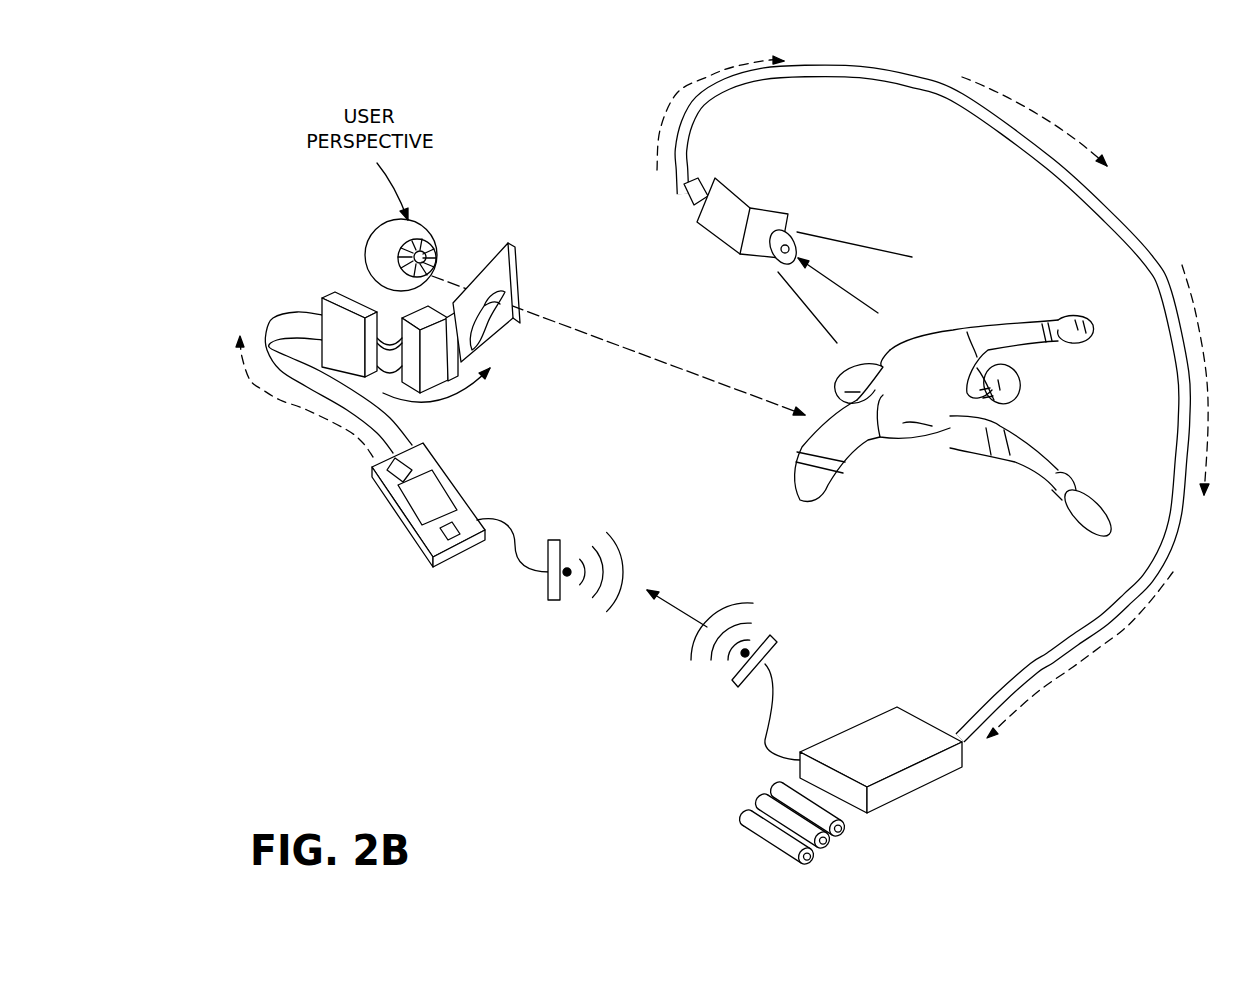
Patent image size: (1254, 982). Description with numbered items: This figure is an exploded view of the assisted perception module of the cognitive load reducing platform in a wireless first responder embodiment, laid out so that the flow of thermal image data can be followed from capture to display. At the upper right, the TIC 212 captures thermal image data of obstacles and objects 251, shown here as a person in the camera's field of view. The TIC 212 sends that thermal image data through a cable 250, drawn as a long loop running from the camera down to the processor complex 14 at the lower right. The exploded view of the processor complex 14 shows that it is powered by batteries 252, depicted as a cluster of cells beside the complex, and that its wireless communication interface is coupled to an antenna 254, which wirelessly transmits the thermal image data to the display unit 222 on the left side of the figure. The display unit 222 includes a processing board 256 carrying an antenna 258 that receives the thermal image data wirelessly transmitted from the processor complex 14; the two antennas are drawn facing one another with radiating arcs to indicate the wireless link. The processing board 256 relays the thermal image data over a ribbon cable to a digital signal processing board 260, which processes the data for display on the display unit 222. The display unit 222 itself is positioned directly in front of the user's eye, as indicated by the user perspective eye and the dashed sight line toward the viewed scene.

The display unit 222 is at (530, 236).
The digital signal processing board 260 is at (325, 288).
The TIC 212 is at (753, 178).
The cable 250 is at (933, 397).
The obstacles and objects 251 is at (957, 430).
The processing board 256 is at (383, 512).
The antenna 258 is at (540, 587).
The antenna 254 is at (723, 680).
The processor complex 14 is at (920, 805).
The batteries 252 is at (755, 847).